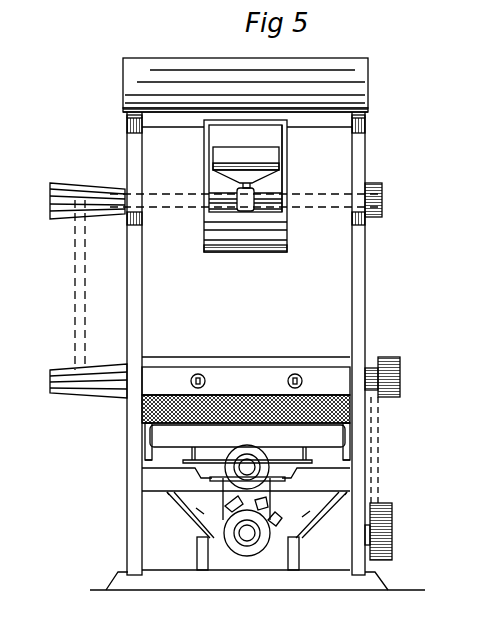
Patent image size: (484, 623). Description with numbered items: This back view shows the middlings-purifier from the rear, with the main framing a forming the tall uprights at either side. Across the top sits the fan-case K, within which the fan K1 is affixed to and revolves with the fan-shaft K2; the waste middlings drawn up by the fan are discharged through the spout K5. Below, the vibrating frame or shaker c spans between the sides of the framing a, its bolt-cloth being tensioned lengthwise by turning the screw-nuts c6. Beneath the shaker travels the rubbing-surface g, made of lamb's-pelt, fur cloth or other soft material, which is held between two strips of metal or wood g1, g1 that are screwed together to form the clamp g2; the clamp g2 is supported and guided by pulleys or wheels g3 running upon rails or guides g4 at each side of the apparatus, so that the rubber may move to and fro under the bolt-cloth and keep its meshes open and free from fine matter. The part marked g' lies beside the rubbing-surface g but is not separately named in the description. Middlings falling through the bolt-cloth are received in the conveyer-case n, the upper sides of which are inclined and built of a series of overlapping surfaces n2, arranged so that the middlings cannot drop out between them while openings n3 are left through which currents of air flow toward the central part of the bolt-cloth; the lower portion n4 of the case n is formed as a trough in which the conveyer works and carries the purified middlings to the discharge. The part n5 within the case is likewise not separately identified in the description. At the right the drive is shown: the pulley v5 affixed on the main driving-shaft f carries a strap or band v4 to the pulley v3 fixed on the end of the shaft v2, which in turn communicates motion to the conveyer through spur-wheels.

The main framing a is at (246, 345).
The fan-case K is at (245, 186).
The fan K1 is at (262, 158).
The fan-shaft K2 is at (245, 199).
The spout K5 is at (284, 140).
The rubbing-surface g is at (87, 201).
The belt g' is at (76, 285).
The main driving-shaft f is at (88, 381).
The vibrating frame or shaker c is at (246, 376).
The screw-nuts c6 is at (252, 378).
The strips of metal or wood g1 is at (247, 436).
The clamp g2 is at (247, 443).
The pulleys or wheels g3 is at (247, 441).
The rails or guides g4 is at (247, 453).
The shaft v2 is at (247, 467).
The pulley v3 is at (378, 525).
The strap or band v4 is at (378, 450).
The pulley v5 is at (382, 373).
The conveyer-case n is at (257, 515).
The overlapping surfaces n2 is at (257, 510).
The openings n3 is at (253, 513).
The trough n4 is at (231, 501).
The deflector blade n5 is at (268, 511).